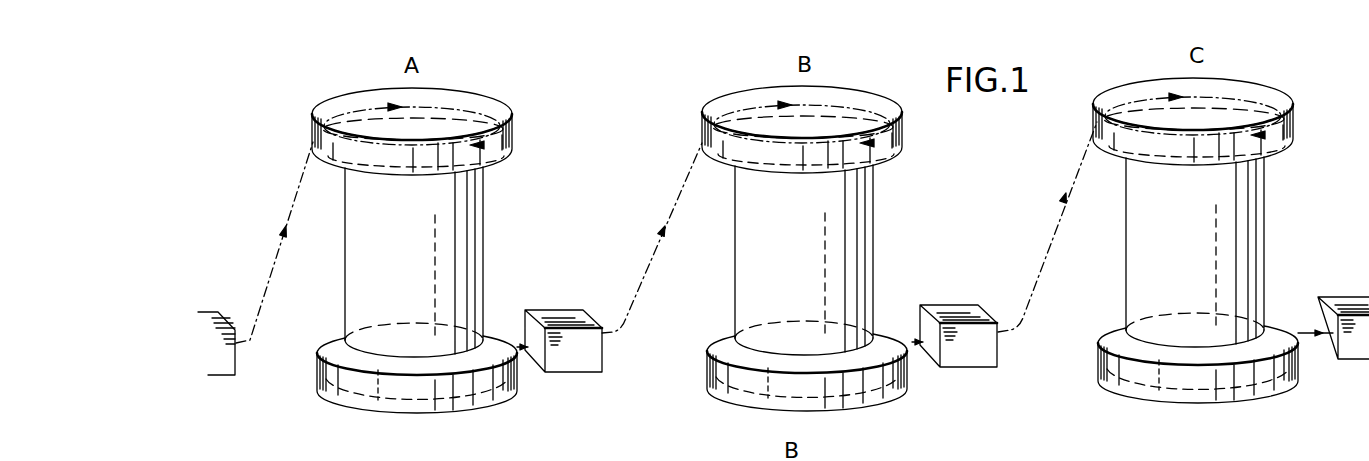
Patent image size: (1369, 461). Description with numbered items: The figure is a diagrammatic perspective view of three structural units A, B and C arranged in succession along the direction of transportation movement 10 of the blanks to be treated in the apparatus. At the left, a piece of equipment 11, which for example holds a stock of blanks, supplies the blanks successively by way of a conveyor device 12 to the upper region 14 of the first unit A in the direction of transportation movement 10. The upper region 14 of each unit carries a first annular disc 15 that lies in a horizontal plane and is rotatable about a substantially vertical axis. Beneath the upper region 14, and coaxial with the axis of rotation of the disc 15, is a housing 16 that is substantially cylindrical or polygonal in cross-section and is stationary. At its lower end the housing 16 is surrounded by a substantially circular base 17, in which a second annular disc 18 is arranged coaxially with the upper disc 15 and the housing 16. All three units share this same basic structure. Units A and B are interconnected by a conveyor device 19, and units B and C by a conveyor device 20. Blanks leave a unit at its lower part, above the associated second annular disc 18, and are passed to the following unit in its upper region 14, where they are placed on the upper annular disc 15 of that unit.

The direction of transportation movement 10 is at (660, 240).
The piece of equipment 11 is at (218, 312).
The conveyor device 12 is at (272, 281).
The upper region 14 is at (510, 128).
The first annular disc 15 is at (437, 121).
The housing 16 is at (480, 203).
The base 17 is at (507, 397).
The second annular disc 18 is at (868, 390).
The conveyor device 19 is at (643, 273).
The conveyor device 20 is at (1037, 273).